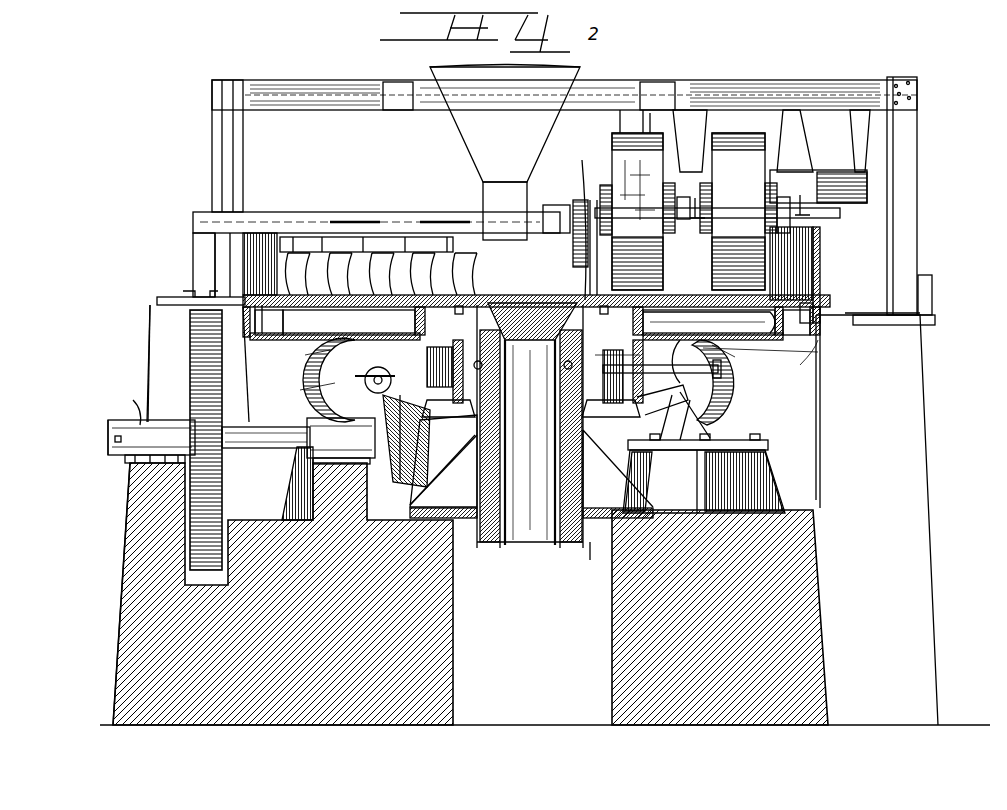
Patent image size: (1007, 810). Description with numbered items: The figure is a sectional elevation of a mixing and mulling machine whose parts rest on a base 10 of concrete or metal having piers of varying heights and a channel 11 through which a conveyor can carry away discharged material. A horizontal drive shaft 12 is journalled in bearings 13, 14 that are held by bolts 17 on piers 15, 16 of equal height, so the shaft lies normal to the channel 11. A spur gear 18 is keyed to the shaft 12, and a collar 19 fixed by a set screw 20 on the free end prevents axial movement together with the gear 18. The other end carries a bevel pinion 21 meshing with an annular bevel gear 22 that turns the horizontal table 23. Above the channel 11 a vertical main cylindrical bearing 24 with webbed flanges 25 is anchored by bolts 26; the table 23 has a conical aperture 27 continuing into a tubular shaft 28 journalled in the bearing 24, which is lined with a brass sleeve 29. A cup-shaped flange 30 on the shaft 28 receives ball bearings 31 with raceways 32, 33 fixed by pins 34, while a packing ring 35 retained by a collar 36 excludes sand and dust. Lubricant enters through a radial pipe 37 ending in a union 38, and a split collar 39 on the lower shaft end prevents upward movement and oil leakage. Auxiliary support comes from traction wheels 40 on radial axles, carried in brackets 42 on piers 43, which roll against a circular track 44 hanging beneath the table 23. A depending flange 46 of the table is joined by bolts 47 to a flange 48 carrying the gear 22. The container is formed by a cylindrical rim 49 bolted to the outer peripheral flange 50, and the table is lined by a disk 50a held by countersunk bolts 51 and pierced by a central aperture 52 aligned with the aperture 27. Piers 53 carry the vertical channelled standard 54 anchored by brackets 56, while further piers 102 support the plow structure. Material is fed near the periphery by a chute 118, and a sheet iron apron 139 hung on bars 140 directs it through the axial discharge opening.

The base 10 is at (145, 635).
The channel 11 is at (578, 685).
The drive shaft 12 is at (273, 450).
The bearing 13 is at (128, 402).
The bearing 14 is at (314, 390).
The pier 15 is at (128, 521).
The pier 16 is at (320, 492).
The bolts 17 is at (135, 460).
The spur gear 18 is at (222, 478).
The collar 19 is at (83, 421).
The set screw 20 is at (118, 436).
The bevel pinion 21 is at (427, 433).
The annular bevel gear 22 is at (667, 452).
The table 23 is at (790, 360).
The main cylindrical bearing 24 is at (593, 553).
The webbed flanges 25 is at (478, 540).
The bolts 26 is at (443, 461).
The conical aperture 27 is at (556, 300).
The tubular shaft 28 is at (518, 545).
The sleeve 29 is at (442, 470).
The cup-shaped flange 30 is at (531, 318).
The bearings 31 is at (521, 346).
The raceway 32 is at (615, 330).
The raceway 33 is at (531, 463).
The pins 34 is at (535, 359).
The packing ring 35 is at (531, 399).
The collar 36 is at (440, 437).
The pipe 37 is at (722, 368).
The union 38 is at (738, 380).
The split collar 39 is at (572, 545).
The traction wheels 40 is at (760, 370).
The brackets 42 is at (740, 418).
The piers 43 is at (760, 490).
The circular track 44 is at (818, 335).
The depending flange 46 is at (655, 325).
The bolts 47 is at (690, 327).
The flange 48 is at (317, 350).
The cylindrical rim 49 is at (240, 288).
The outer peripheral flange 50 is at (192, 315).
The disk 50a is at (875, 280).
The countersunk bolts 51 is at (270, 330).
The central aperture 52 is at (520, 300).
The piers 53 is at (877, 519).
The standard 54 is at (232, 154).
The brackets 56 is at (200, 242).
The piers 102 is at (167, 362).
The chute 118 is at (468, 145).
The sheet iron apron 139 is at (522, 232).
The bars 140 is at (482, 243).